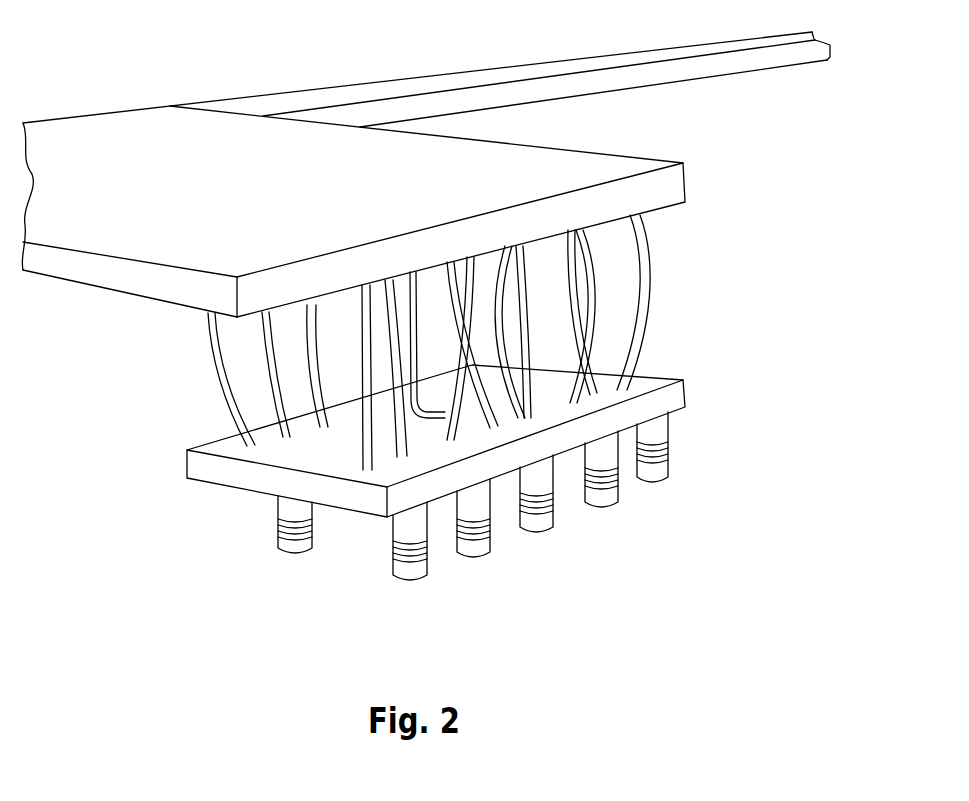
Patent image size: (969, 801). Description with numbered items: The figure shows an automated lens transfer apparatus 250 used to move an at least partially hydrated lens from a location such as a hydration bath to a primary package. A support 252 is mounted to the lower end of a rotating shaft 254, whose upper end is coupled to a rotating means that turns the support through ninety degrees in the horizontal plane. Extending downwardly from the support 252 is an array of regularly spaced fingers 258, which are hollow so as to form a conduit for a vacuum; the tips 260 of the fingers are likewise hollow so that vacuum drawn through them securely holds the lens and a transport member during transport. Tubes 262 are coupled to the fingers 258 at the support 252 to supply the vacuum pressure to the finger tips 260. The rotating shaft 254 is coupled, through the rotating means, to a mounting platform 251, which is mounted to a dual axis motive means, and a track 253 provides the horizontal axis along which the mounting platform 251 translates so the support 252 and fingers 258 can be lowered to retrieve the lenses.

The connector assembly 250 is at (731, 322).
The mounting platform 251 is at (176, 240).
The support 252 is at (263, 477).
The track 253 is at (693, 68).
The rotating shaft 254 is at (437, 340).
The fingers 258 is at (517, 496).
The finger tips 260 is at (661, 496).
The tubes 262 is at (648, 270).